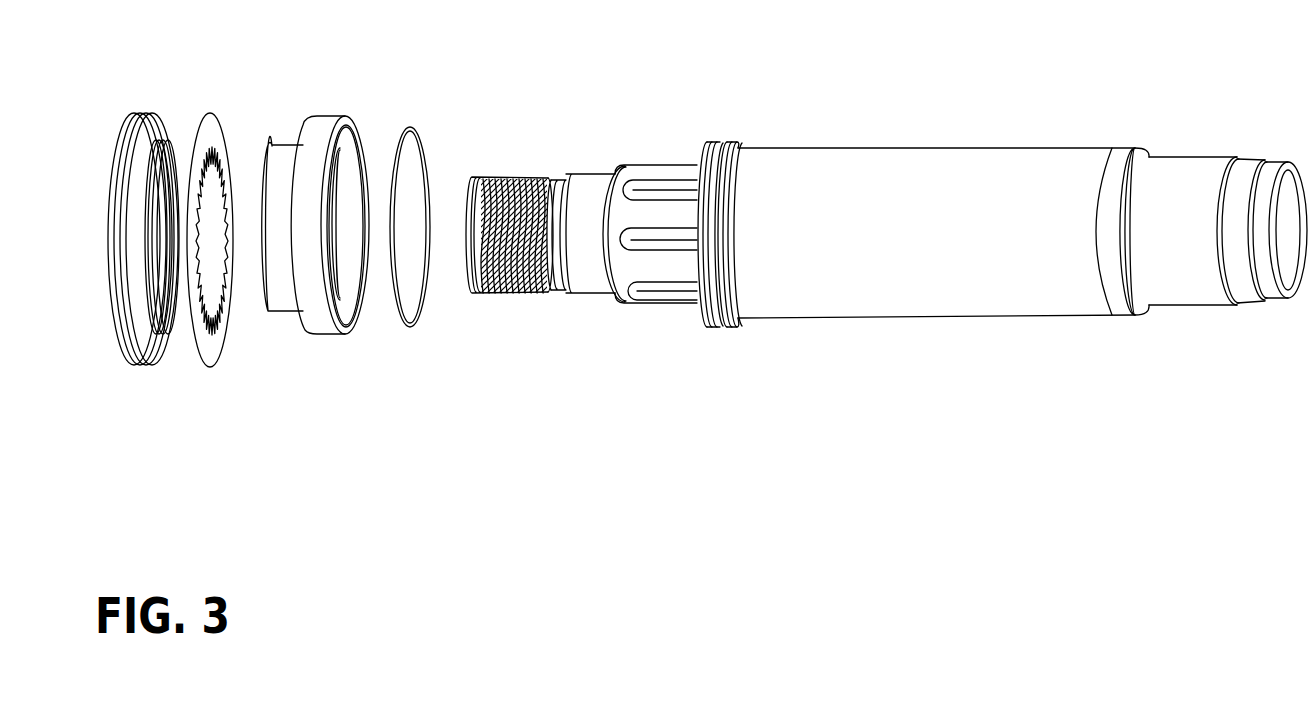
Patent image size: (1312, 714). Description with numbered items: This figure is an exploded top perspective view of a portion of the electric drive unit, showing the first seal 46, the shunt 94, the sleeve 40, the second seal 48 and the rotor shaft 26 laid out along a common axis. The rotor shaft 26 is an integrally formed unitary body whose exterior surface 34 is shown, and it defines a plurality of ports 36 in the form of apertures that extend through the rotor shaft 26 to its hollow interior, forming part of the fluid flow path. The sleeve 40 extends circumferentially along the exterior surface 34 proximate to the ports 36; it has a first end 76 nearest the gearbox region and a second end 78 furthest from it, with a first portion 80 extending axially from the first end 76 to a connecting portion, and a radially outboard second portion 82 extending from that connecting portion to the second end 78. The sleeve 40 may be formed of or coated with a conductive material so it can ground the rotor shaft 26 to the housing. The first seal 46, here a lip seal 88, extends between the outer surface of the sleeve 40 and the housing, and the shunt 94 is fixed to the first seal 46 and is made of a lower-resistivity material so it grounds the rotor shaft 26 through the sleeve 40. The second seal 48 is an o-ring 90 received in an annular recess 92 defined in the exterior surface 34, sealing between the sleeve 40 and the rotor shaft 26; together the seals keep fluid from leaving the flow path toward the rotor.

The rotor shaft 26 is at (859, 144).
The exterior surface 34 is at (581, 216).
The port 36 is at (632, 287).
The sleeve 40 is at (310, 219).
The first seal 46 is at (136, 186).
The second seal 48 is at (437, 172).
The first end 76 is at (258, 168).
The second end 78 is at (358, 133).
The first portion 80 is at (288, 291).
The second portion 82 is at (321, 313).
The lip seal 88 is at (157, 131).
The o-ring 90 is at (422, 152).
The annular recess 92 is at (703, 150).
The shunt 94 is at (210, 132).